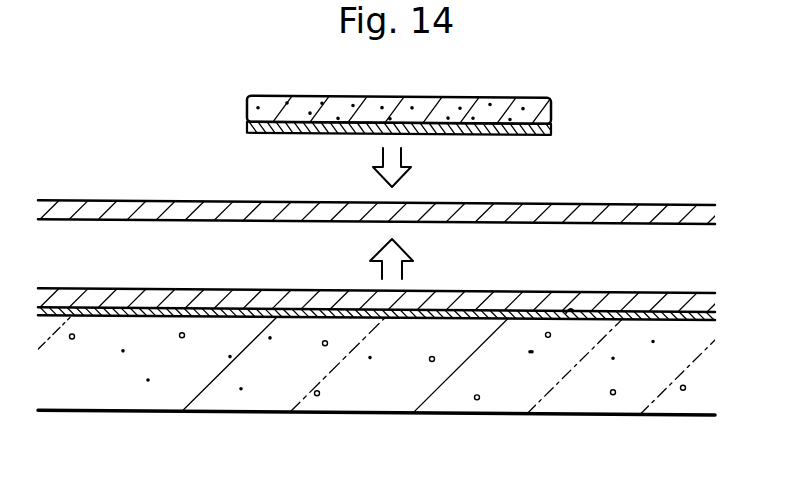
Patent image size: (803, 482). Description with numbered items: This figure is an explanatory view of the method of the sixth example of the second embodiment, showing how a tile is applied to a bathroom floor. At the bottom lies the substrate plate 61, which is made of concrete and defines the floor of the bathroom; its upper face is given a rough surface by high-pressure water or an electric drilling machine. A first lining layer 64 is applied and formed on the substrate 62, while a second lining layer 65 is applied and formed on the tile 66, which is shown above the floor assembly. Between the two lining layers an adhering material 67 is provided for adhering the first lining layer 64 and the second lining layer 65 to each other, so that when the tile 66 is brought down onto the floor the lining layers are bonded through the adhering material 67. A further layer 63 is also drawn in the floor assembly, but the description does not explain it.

The substrate plate 61 is at (465, 382).
The substrate 62 is at (570, 309).
The intermediate layer 63 is at (598, 310).
The first lining layer 64 is at (693, 305).
The second lining layer 65 is at (523, 133).
The tile 66 is at (552, 103).
The adhering material 67 is at (630, 212).